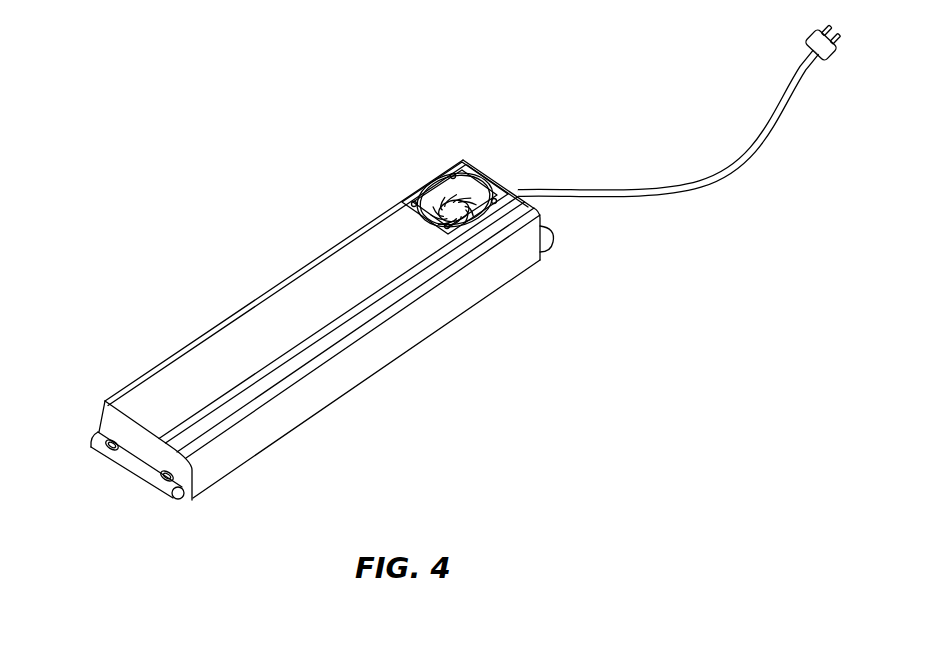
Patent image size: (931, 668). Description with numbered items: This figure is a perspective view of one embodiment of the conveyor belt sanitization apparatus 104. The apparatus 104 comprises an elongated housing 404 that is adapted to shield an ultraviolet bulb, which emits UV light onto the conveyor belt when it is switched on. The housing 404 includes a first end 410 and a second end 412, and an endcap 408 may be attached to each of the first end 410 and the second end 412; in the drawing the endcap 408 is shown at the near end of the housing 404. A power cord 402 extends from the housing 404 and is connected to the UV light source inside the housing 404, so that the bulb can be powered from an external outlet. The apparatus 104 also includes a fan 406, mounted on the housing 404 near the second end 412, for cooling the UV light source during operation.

The apparatus 104 is at (151, 134).
The power cord 402 is at (711, 172).
The housing 404 is at (360, 256).
The fan 406 is at (428, 186).
The endcap 408 is at (117, 420).
The first end 410 is at (147, 395).
The second end 412 is at (525, 262).